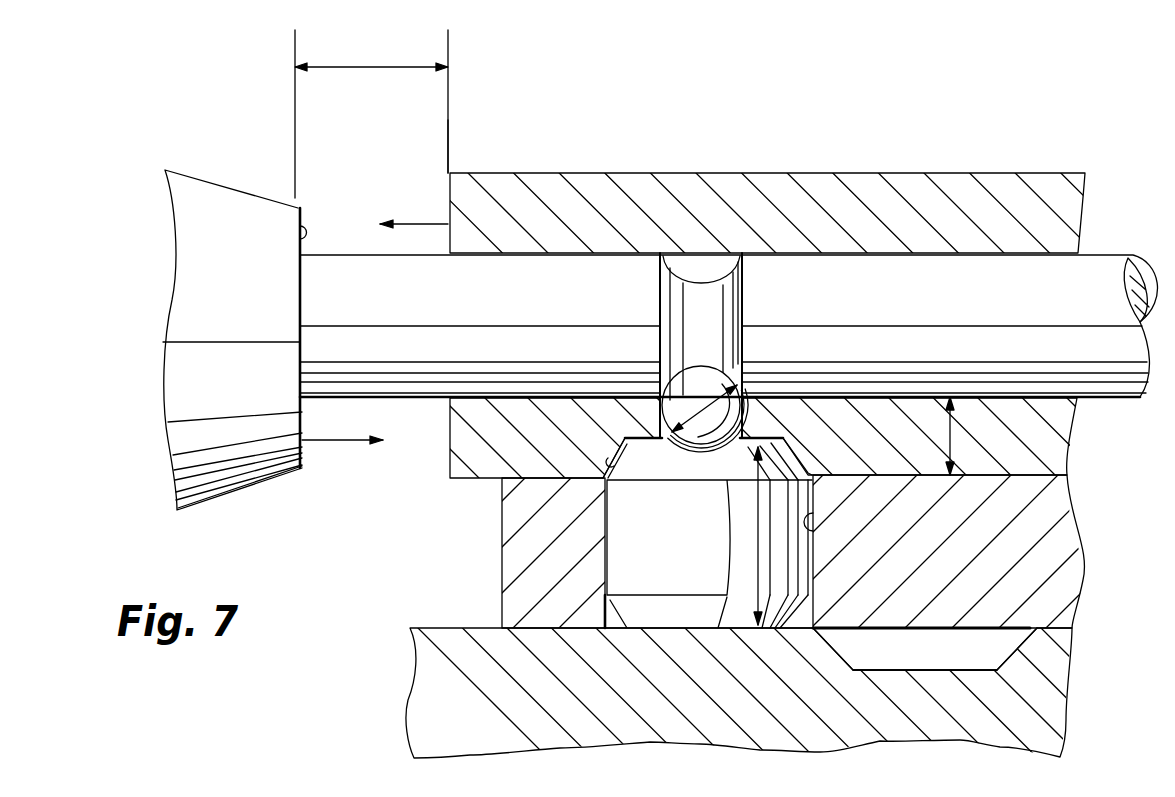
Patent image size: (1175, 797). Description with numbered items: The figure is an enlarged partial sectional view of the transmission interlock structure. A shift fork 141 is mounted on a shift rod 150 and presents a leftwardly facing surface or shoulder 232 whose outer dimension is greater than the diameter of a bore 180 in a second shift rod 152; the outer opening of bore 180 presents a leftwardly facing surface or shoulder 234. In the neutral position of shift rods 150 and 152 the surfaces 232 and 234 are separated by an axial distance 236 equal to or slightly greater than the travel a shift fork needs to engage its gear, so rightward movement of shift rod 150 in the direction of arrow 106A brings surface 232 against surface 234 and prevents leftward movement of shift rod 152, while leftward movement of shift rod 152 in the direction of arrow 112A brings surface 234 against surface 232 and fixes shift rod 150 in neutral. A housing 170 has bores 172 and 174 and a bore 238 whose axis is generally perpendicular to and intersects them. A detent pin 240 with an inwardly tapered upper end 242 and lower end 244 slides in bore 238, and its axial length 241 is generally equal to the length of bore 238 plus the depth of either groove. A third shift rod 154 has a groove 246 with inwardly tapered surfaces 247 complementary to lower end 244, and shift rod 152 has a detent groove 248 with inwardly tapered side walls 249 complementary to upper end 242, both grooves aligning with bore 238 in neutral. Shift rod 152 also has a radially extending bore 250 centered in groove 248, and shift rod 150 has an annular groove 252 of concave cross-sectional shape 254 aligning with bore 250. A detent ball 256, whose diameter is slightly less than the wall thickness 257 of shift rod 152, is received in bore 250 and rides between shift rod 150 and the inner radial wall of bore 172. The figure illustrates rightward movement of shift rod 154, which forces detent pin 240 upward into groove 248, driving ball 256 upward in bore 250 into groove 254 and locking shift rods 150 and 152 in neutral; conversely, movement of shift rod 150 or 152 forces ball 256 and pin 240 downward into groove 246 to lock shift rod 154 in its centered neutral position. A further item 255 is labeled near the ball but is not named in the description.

The arrow 106A is at (337, 440).
The arrow 112A is at (410, 224).
The shift fork 141 is at (241, 403).
The shift rod 150 is at (426, 299).
The shift rod 152 is at (450, 452).
The shift rod 154 is at (1067, 688).
The housing 170 is at (1050, 547).
The bore 172 is at (1040, 474).
The bore 174 is at (518, 633).
The bore 180 is at (514, 257).
The shoulder 232 is at (298, 240).
The shoulder 234 is at (447, 185).
The axial distance 236 is at (325, 67).
The bore 238 is at (815, 526).
The detent pin 240 is at (715, 559).
The axial length 241 is at (756, 498).
The upper end 242 is at (668, 460).
The lower end 244 is at (655, 615).
The groove 246 is at (853, 643).
The inwardly tapered surfaces 247 is at (898, 662).
The detent groove 248 is at (623, 450).
The inwardly tapered side walls 249 is at (600, 468).
The bore 250 is at (740, 384).
The annular groove 252 is at (744, 286).
The concave cross-sectional shape 254 is at (688, 283).
The detent recess 255 is at (722, 382).
The detent ball 256 is at (692, 392).
The thickness 257 is at (948, 430).